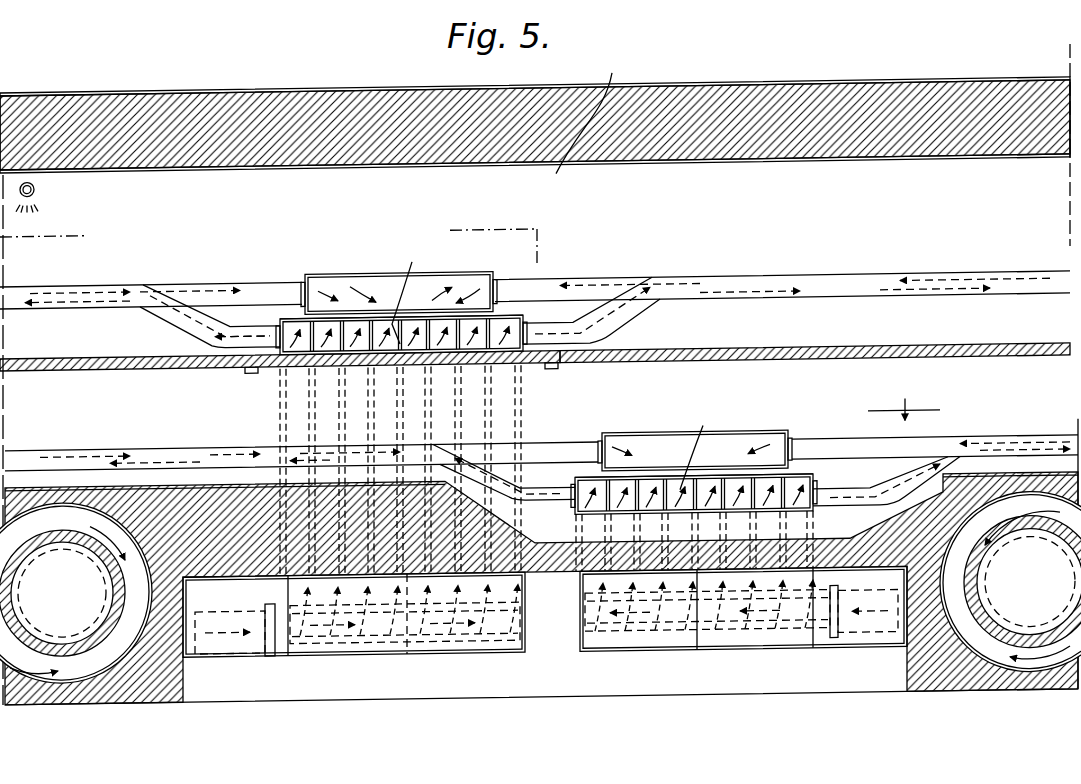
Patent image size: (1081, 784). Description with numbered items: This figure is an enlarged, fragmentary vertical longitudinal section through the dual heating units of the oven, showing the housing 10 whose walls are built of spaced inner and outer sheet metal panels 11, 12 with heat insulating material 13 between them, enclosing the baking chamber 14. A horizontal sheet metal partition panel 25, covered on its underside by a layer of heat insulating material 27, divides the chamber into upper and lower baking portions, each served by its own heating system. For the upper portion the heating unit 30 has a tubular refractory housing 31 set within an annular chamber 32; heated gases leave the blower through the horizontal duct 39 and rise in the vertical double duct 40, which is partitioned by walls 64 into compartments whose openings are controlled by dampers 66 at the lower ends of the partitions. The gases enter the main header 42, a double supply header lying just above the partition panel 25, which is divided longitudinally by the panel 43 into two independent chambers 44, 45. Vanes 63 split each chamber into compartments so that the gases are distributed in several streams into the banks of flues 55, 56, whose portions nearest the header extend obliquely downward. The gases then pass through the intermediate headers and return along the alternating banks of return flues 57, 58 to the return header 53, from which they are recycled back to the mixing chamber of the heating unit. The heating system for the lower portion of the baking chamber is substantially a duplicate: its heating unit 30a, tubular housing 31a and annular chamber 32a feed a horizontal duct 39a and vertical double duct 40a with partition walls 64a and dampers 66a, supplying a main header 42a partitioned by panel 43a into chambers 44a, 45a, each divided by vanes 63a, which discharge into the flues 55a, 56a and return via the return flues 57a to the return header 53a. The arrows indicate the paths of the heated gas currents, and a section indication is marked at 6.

The housing 10 is at (214, 92).
The inner sheet metal panel 11 is at (283, 173).
The outer sheet metal panel 12 is at (272, 94).
The heat insulating material 13 is at (322, 108).
The baking chamber 14 is at (589, 116).
The partition panel 25 is at (680, 360).
The heat insulating layer 27 is at (148, 372).
The heating unit 30 is at (80, 690).
The tubular housing 31 is at (110, 655).
The annular chamber 32 is at (128, 652).
The heating unit 30a is at (1008, 680).
The tubular housing 31a is at (1036, 668).
The annular chamber 32a is at (975, 658).
The horizontally extending duct 39 is at (238, 660).
The vertically extending double duct 40 is at (410, 652).
The horizontally extending duct 39a is at (850, 652).
The vertically extending double duct 40a is at (702, 655).
The main header 42 is at (290, 320).
The panel 43 is at (407, 293).
The chamber 44 is at (292, 332).
The chamber 45 is at (527, 337).
The main header 42a is at (746, 482).
The panel 43a is at (698, 447).
The chamber 44a is at (590, 482).
The chamber 45a is at (790, 490).
The return header 53 is at (364, 282).
The return header 53a is at (640, 444).
The flues 55 is at (160, 316).
The flues 56 is at (630, 320).
The flues 55a is at (557, 495).
The flues 56a is at (856, 514).
The return flues 57 is at (24, 307).
The return flues 58 is at (604, 286).
The return flues 57a is at (97, 452).
The vanes 63 is at (350, 350).
The vanes 63a is at (722, 492).
The partition walls 64 is at (332, 406).
The partition walls 64a is at (800, 526).
The dampers 66 is at (300, 594).
The dampers 66a is at (582, 612).
The section line 6 is at (904, 400).